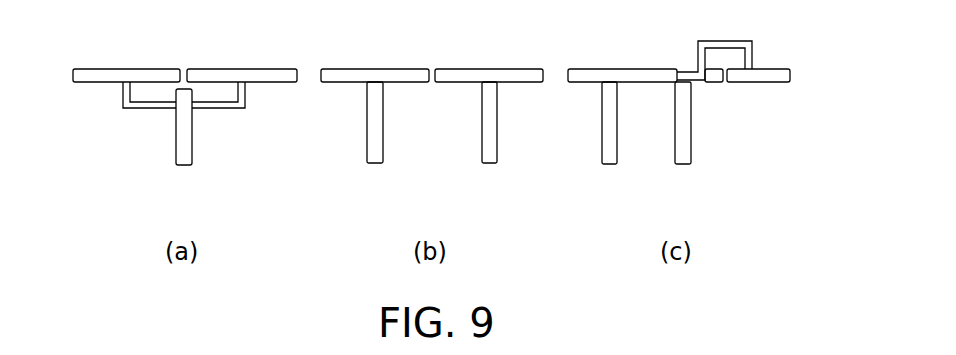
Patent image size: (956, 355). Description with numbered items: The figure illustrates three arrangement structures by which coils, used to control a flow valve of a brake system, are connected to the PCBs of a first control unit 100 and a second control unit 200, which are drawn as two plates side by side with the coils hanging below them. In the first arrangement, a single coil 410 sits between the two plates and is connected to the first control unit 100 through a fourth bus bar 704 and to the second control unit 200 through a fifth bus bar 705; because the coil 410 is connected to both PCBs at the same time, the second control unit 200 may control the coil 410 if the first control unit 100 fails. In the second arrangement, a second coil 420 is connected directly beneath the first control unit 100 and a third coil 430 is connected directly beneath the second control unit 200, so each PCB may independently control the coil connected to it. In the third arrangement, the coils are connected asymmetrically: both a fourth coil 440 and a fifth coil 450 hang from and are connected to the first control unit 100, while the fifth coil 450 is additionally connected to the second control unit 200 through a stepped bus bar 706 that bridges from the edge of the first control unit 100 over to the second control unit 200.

The first control unit 100 is at (102, 68).
The second control unit 200 is at (265, 68).
The coil 410 is at (180, 150).
The second coil 420 is at (370, 151).
The third coil 430 is at (487, 151).
The fourth coil 440 is at (607, 151).
The fifth coil 450 is at (686, 151).
The fourth bus bar 704 is at (142, 108).
The fifth bus bar 705 is at (225, 108).
The bus bar 706 is at (697, 52).